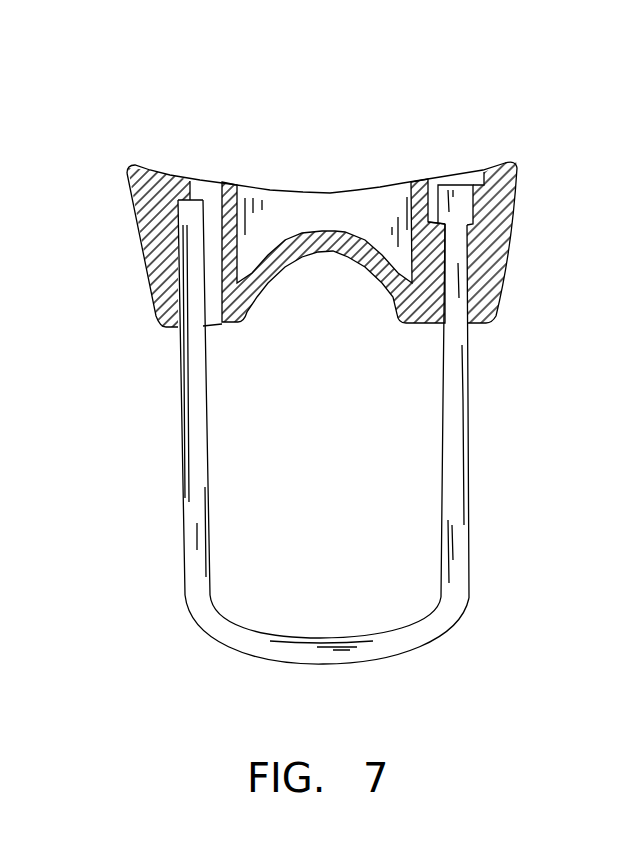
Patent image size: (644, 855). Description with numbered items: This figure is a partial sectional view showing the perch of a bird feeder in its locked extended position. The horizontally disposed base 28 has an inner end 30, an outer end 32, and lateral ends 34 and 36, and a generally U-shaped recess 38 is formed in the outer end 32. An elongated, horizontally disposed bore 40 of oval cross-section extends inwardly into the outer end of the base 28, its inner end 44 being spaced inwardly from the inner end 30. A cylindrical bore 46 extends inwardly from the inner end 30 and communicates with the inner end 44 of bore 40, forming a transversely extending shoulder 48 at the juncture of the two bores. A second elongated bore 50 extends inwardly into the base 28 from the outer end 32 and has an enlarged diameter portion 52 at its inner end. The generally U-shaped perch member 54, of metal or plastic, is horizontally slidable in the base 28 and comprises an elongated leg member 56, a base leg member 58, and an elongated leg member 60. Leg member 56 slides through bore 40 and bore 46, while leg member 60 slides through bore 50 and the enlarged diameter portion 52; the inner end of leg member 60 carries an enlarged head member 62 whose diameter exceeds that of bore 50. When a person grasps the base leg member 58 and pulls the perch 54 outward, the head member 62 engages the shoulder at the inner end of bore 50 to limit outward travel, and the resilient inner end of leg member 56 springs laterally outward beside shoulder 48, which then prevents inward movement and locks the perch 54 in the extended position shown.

The base 28 is at (543, 195).
The inner end 30 is at (458, 168).
The outer end 32 is at (478, 332).
The end 34 is at (162, 270).
The end 36 is at (506, 256).
The U-shaped recess 38 is at (328, 254).
The bore 40 is at (217, 320).
The inner end of bore 44 is at (178, 198).
The bore 46 is at (211, 205).
The shoulder 48 is at (176, 212).
The bore 50 is at (421, 325).
The enlarged diameter portion 52 is at (432, 193).
The perch member 54 is at (357, 607).
The leg member 56 is at (193, 483).
The base leg member 58 is at (387, 642).
The leg member 60 is at (468, 490).
The head member 62 is at (462, 212).